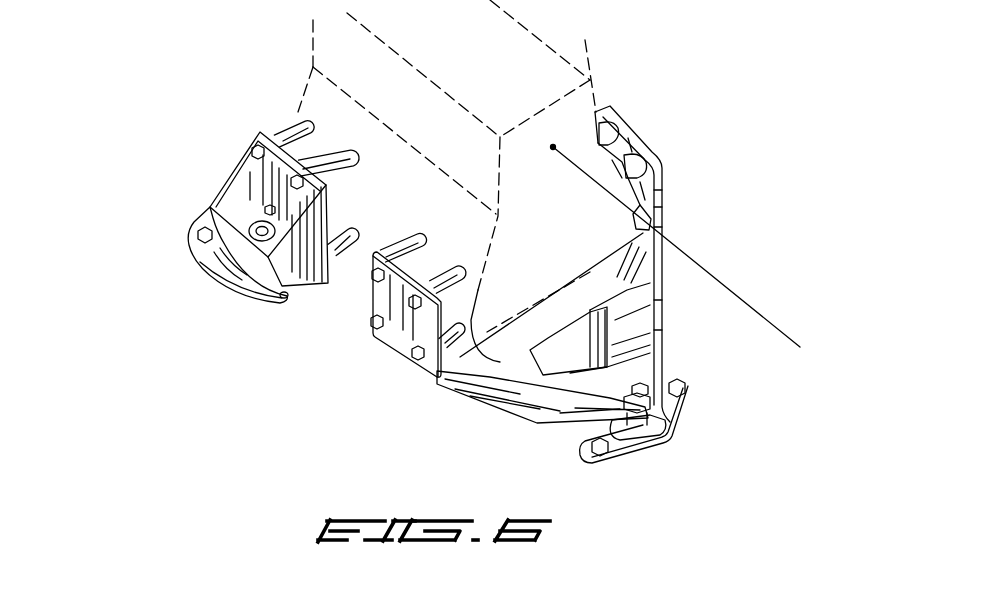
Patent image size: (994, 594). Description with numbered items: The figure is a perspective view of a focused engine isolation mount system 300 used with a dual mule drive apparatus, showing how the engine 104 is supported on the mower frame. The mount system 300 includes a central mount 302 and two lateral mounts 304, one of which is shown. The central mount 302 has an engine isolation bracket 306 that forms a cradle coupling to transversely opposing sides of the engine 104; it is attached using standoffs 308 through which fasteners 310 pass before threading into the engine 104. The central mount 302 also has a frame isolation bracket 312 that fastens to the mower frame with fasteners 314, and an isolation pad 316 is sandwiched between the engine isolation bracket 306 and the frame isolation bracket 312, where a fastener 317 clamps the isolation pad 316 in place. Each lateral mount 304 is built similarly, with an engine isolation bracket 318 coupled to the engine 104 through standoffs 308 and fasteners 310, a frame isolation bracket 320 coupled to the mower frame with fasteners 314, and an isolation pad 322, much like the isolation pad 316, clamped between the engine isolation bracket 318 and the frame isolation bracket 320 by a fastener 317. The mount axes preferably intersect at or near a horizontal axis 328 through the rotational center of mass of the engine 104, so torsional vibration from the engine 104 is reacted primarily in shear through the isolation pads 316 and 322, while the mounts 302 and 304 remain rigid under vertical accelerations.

The engine 104 is at (581, 45).
The focused engine isolation mount system 300 is at (263, 340).
The central mount 302 is at (650, 339).
The lateral mount 304 is at (242, 204).
The engine isolation bracket 306 is at (487, 399).
The standoff 308 is at (425, 195).
The fastener 310 is at (303, 282).
The frame isolation bracket 312 is at (680, 426).
The fastener 314 is at (198, 233).
The isolation pad 316 is at (638, 460).
The fastener 317 is at (262, 212).
The engine isolation bracket 318 is at (228, 172).
The frame isolation bracket 320 is at (212, 262).
The isolation pad 322 is at (246, 285).
The horizontal axis 328 is at (763, 310).